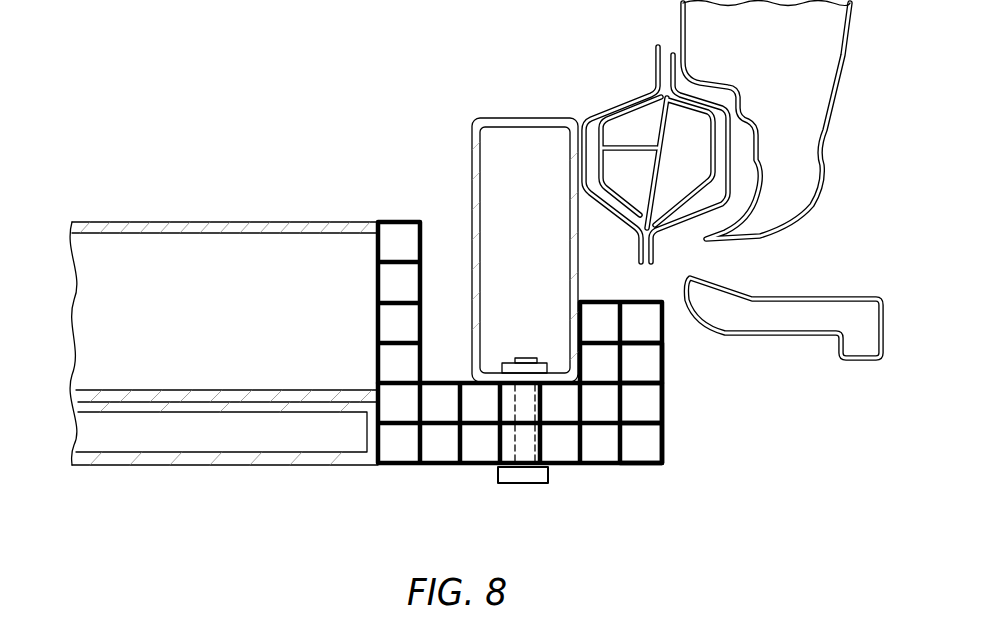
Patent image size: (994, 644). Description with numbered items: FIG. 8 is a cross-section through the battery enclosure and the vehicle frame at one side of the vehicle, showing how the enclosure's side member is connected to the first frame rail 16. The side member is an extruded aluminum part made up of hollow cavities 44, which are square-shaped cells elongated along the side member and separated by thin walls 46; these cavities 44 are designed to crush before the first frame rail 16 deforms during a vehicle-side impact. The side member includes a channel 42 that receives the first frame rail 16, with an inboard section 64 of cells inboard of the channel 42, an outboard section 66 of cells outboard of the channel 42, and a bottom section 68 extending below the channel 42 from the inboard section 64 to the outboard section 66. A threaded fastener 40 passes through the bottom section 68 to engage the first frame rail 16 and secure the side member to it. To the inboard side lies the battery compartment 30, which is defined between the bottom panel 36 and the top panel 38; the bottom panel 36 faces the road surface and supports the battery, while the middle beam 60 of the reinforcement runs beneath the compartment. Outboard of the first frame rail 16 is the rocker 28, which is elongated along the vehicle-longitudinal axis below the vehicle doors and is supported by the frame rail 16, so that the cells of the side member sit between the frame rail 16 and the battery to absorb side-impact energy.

The first frame rail 16 is at (505, 118).
The rocker 28 is at (622, 97).
The battery compartment 30 is at (196, 258).
The bottom panel 36 is at (135, 392).
The top panel 38 is at (277, 222).
The fastener 40 is at (550, 473).
The channel 42 is at (453, 211).
The hollow cavity 44 is at (640, 443).
The wall 46 is at (456, 447).
The middle beam 60 is at (188, 466).
The inboard section 64 is at (404, 194).
The outboard section 66 is at (613, 281).
The bottom section 68 is at (491, 473).